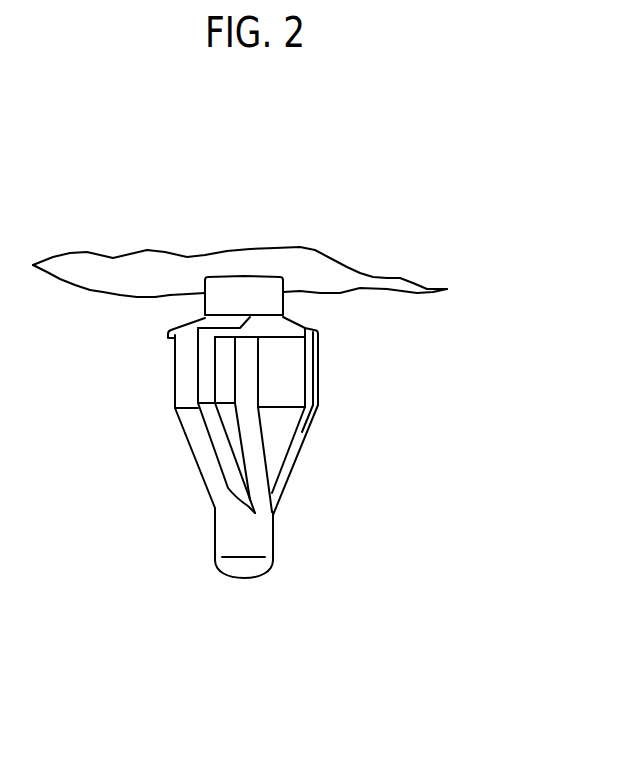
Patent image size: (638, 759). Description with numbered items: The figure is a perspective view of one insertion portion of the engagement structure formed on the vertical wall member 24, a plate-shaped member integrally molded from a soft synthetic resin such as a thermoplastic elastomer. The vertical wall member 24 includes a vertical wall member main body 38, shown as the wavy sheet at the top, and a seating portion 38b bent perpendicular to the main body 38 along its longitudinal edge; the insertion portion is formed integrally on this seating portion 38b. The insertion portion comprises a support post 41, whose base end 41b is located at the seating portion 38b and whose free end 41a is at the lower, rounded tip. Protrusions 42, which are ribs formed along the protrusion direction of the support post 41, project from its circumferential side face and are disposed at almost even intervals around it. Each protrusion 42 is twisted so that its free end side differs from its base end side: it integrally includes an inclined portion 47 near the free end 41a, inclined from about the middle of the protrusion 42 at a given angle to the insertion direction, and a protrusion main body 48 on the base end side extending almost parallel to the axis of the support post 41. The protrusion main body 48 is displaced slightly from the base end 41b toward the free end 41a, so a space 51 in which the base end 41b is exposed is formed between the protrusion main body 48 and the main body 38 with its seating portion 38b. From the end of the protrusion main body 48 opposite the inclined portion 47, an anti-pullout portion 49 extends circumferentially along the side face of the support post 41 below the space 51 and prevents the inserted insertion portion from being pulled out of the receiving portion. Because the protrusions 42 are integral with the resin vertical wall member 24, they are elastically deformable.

The vertical wall member 24 is at (348, 268).
The vertical wall member main body 38 is at (88, 277).
The seating portion 38b is at (362, 280).
The support post 41 is at (275, 533).
The free end 41a is at (242, 580).
The base end 41b is at (244, 290).
The protrusion 42 is at (208, 418).
The inclined portion 47 is at (218, 447).
The protrusion main body 48 is at (205, 375).
The anti-pullout portion 49 is at (187, 342).
The space 51 is at (185, 307).